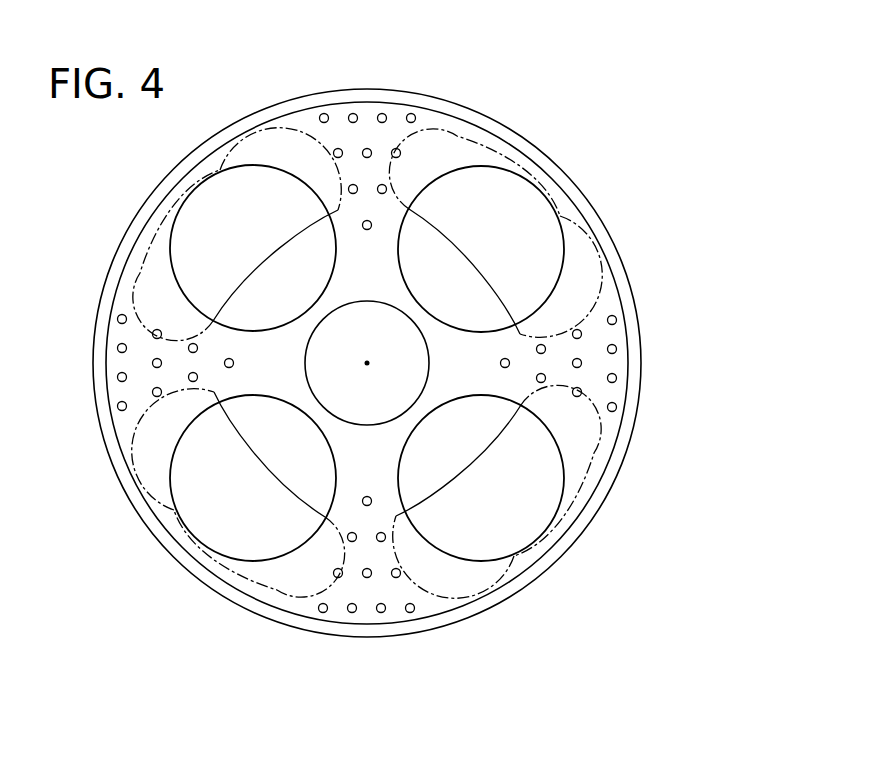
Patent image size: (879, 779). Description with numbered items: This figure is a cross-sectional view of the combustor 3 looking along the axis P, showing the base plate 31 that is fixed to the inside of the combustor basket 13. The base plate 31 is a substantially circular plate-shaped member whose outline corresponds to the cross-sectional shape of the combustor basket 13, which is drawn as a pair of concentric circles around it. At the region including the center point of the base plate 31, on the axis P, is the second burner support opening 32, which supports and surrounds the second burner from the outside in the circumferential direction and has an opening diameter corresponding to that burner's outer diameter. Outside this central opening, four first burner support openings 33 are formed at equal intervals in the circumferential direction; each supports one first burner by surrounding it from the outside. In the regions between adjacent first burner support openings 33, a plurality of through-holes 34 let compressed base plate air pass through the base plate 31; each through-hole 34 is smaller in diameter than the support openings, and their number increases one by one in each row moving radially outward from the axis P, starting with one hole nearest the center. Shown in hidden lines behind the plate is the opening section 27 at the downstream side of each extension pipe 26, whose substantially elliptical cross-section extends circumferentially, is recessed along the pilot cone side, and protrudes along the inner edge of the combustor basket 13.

The combustor 3 is at (630, 111).
The combustor basket 13 is at (631, 295).
The extension pipe 26 is at (367, 368).
The opening section 27 is at (260, 145).
The base plate 31 is at (558, 192).
The second burner support opening 32 is at (190, 379).
The first burner support opening 33 is at (173, 275).
The through-hole 34 is at (367, 104).
The axis P is at (368, 362).